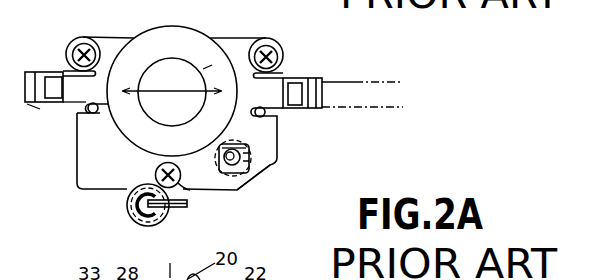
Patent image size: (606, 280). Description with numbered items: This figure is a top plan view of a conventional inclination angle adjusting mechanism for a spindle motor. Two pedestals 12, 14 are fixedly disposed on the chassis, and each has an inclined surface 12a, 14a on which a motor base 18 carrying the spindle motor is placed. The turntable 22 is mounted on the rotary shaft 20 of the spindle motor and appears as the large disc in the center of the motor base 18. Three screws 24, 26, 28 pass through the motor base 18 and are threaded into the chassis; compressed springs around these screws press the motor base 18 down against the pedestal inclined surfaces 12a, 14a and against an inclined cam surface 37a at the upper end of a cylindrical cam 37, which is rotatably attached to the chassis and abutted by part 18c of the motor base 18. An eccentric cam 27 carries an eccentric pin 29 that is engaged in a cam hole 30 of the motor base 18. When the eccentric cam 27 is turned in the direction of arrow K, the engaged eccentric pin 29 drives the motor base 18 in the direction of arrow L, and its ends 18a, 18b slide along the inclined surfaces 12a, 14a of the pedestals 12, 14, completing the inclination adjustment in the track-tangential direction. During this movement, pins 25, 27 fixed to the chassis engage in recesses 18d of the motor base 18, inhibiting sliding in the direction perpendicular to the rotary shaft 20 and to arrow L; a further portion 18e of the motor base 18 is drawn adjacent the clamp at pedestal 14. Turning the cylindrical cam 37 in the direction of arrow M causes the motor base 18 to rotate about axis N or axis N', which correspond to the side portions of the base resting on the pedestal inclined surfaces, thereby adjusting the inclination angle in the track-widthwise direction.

The pedestal 12 is at (42, 70).
The inclined surface 12a is at (40, 108).
The pedestal 14 is at (308, 77).
The inclined surface 14a is at (323, 94).
The motor base 18 is at (80, 168).
The end of motor base 18a is at (55, 71).
The end of motor base 18b is at (290, 77).
The part of motor base 18c is at (173, 203).
The recess 18d is at (100, 116).
The bracket clamp tab 18e is at (288, 94).
The rotary shaft 20 is at (172, 90).
The turntable 22 is at (188, 68).
The screw 24 is at (85, 43).
The pin 25 is at (85, 109).
The screw 26 is at (270, 44).
The eccentric cam 27 is at (272, 113).
The screw 28 is at (190, 191).
The eccentric pin 29 is at (262, 143).
The cam hole 30 is at (258, 166).
The cylindrical cam 37 is at (125, 200).
The inclined cam surface 37a is at (133, 222).
The arrow M is at (150, 213).
The arrow K is at (238, 191).
The arrow L is at (211, 71).
The axis N is at (380, 59).
The axis N' is at (362, 125).